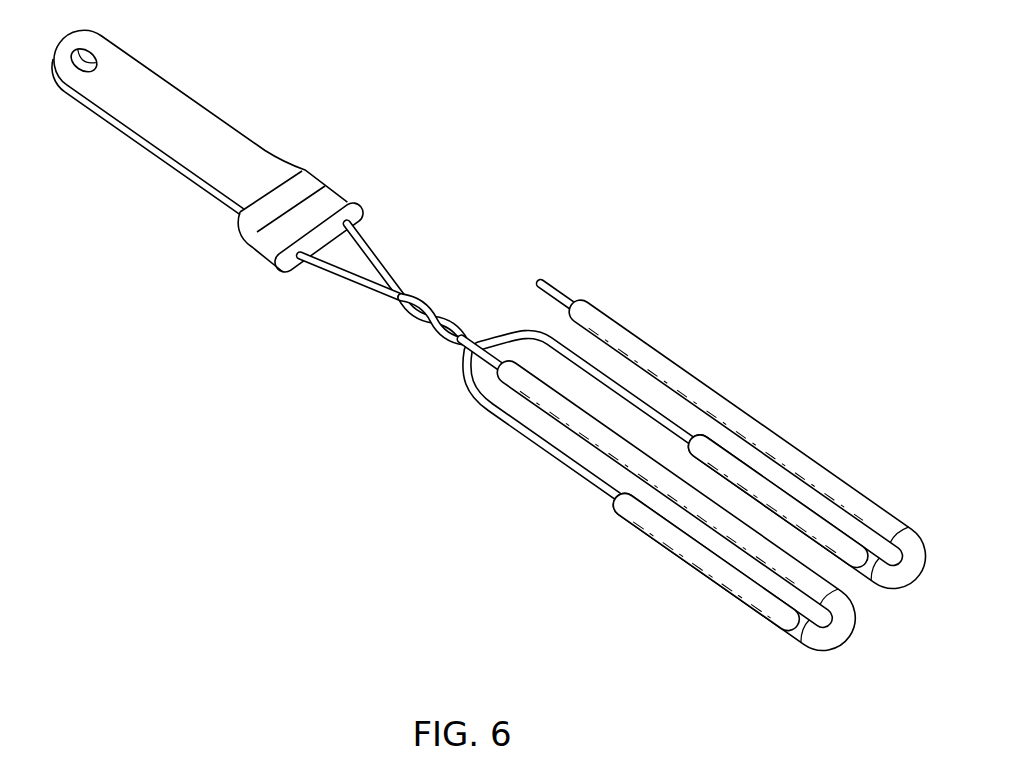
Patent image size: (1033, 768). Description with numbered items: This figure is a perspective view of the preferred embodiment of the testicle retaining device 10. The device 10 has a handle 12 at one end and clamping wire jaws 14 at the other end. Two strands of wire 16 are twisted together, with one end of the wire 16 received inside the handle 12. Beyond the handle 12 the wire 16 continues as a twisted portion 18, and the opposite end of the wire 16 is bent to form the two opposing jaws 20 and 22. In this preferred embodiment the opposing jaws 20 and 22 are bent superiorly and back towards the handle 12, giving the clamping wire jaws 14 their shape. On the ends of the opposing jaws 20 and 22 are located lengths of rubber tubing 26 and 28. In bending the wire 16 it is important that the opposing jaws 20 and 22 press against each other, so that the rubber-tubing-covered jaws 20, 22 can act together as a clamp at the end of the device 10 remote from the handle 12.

The testicle retaining device 10 is at (484, 345).
The handle 12 is at (210, 105).
The clamping wire jaws 14 is at (681, 476).
The wire 16 is at (352, 277).
The twisted portion 18 is at (422, 325).
The opposing jaw 20 is at (700, 448).
The opposing jaw 22 is at (644, 493).
The rubber tubing 26 is at (693, 434).
The rubber tubing 28 is at (613, 503).